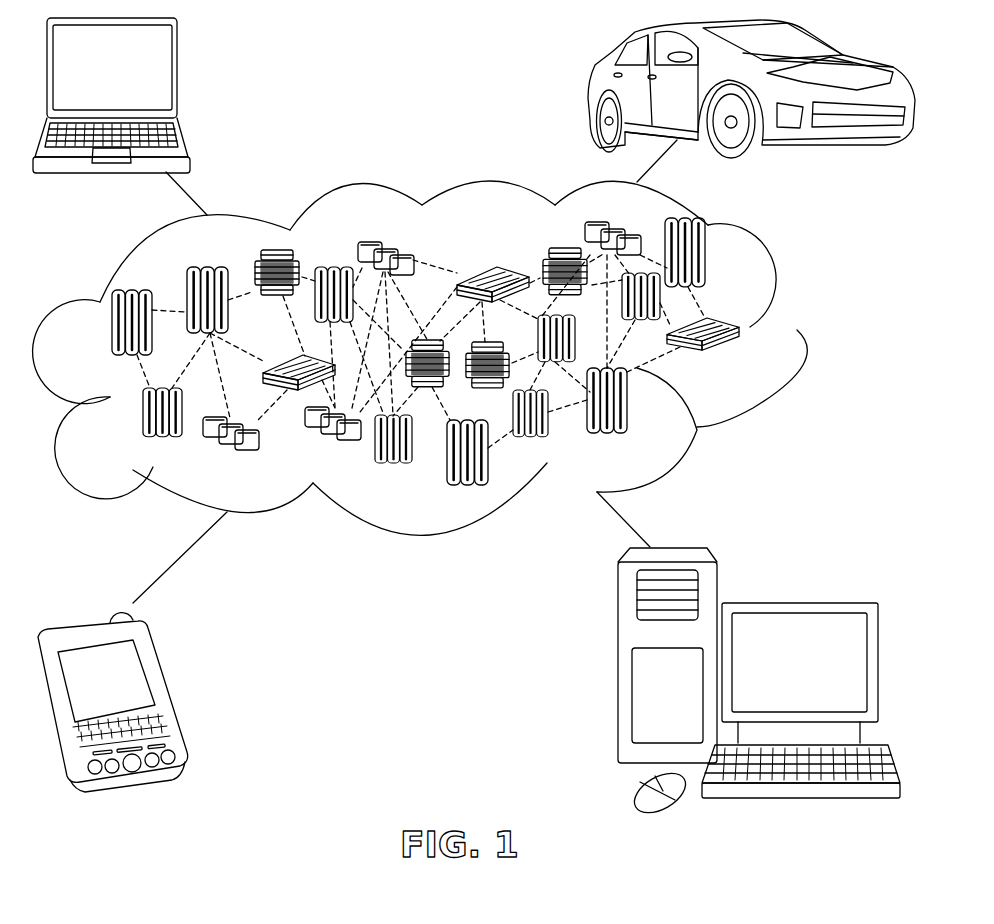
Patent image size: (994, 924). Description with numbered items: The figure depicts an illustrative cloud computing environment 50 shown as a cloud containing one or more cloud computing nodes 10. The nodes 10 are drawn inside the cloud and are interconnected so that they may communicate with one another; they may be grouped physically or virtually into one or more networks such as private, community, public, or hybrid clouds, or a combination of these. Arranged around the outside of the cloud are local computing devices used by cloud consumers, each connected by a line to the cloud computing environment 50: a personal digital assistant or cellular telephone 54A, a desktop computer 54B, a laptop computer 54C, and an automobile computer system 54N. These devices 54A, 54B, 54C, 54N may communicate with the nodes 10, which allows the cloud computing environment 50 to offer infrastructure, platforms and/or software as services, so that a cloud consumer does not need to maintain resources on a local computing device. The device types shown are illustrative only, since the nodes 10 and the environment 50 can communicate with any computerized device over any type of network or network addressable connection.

The cloud computing nodes 10 is at (474, 419).
The cloud computing environment 50 is at (800, 332).
The personal digital assistant (PDA) or cellular telephone 54A is at (167, 688).
The desktop computer 54B is at (797, 603).
The laptop computer 54C is at (178, 75).
The automobile computer system 54N is at (589, 92).